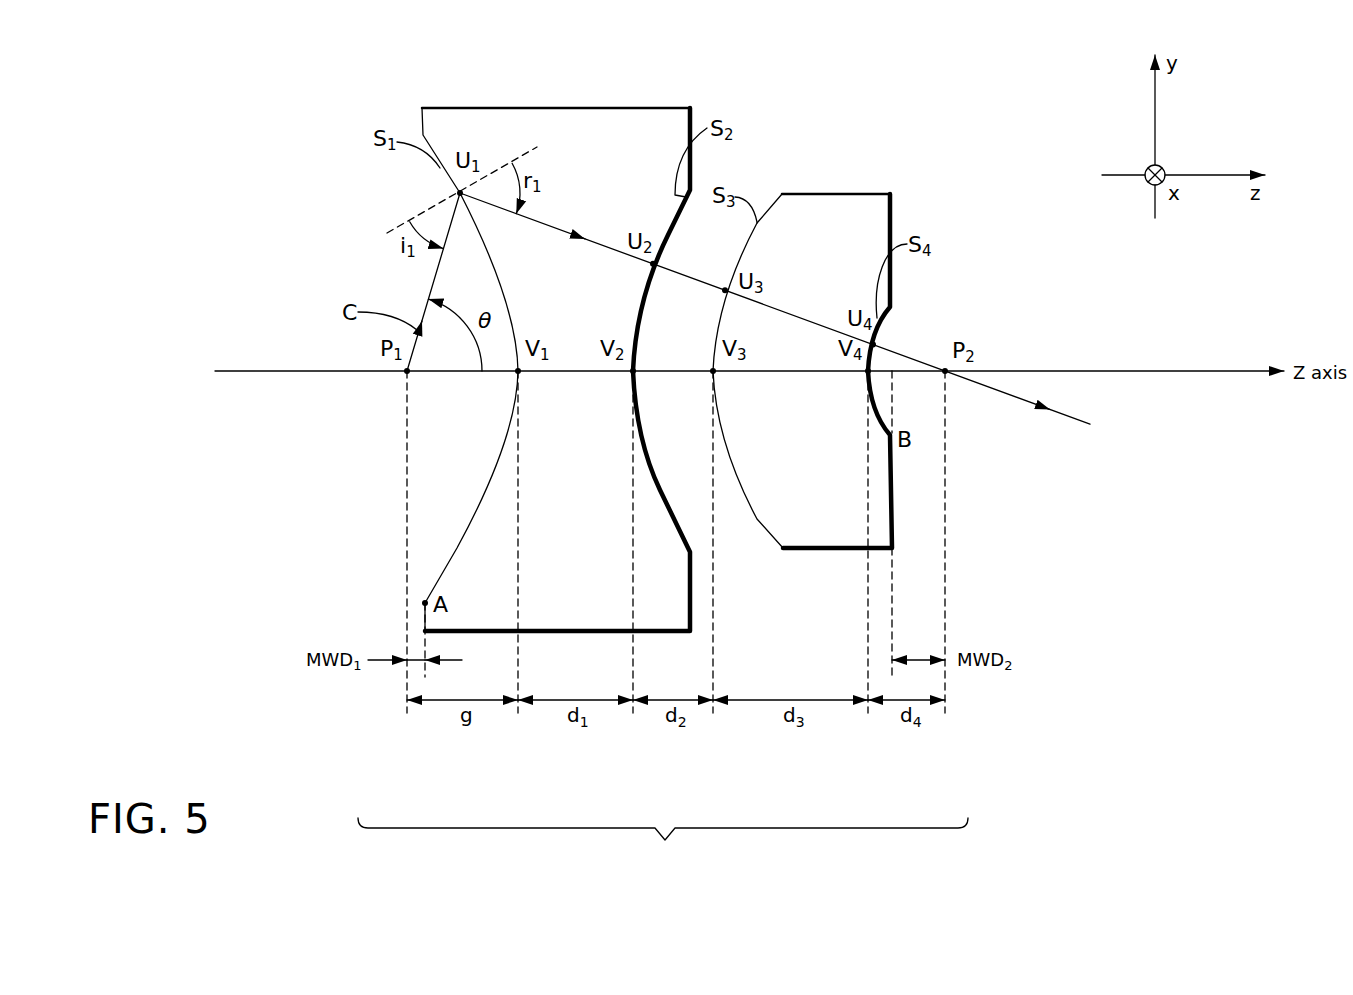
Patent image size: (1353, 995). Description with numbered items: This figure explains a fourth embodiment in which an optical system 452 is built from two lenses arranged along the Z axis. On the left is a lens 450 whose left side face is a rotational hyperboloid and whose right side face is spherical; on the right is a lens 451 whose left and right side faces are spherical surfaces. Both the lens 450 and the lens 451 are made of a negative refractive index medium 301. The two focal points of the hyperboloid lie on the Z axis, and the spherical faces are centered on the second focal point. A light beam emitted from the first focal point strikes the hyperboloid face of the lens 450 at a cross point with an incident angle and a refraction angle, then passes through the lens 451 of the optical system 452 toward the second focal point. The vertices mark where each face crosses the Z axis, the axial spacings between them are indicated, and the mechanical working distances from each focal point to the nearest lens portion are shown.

The negative refractive index medium 301 is at (472, 122).
The lens 450 is at (594, 107).
The lens 451 is at (810, 192).
The optical system 452 is at (663, 848).